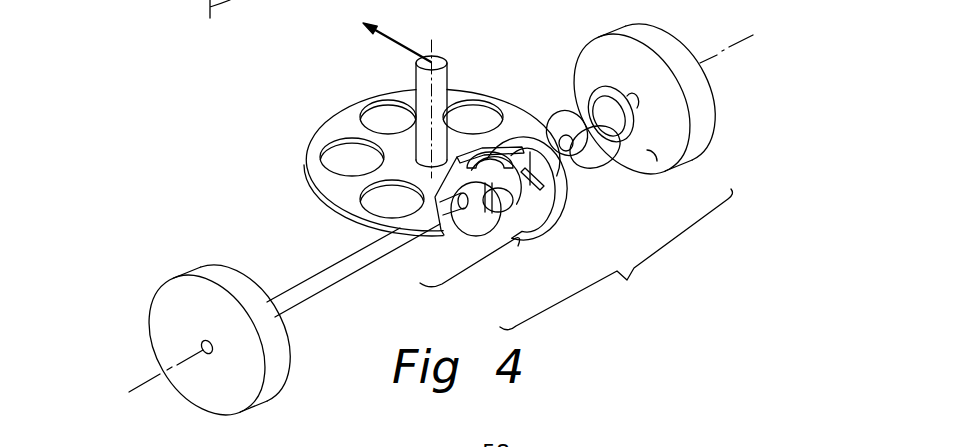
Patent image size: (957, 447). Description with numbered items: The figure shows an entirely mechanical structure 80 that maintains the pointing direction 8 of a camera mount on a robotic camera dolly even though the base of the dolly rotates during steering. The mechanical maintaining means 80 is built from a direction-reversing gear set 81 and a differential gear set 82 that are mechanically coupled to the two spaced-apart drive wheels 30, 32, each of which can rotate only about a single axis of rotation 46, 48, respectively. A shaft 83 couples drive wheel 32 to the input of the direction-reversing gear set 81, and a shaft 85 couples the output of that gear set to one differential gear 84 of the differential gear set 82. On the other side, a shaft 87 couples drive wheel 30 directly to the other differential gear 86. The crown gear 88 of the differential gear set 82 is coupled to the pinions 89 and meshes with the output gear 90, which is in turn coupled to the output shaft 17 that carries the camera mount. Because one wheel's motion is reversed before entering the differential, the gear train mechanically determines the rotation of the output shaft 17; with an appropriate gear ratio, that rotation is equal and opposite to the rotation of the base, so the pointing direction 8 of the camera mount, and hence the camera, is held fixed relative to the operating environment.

The pointing direction 8 is at (388, 32).
The output shaft 17 is at (450, 80).
The drive wheel 30 is at (223, 262).
The drive wheel 32 is at (677, 42).
The axis of rotation 46 is at (147, 383).
The axis of rotation 48 is at (697, 65).
The mechanical maintaining means 80 is at (616, 259).
The direction-reversing gear set 81 is at (655, 153).
The differential gear set 82 is at (484, 262).
The shaft 83 is at (595, 62).
The differential gear 84 is at (560, 226).
The shaft 85 is at (565, 118).
The differential gear 86 is at (458, 222).
The shaft 87 is at (295, 307).
The crown gear 88 is at (567, 200).
The pinions 89 is at (493, 234).
The output gear 90 is at (323, 122).